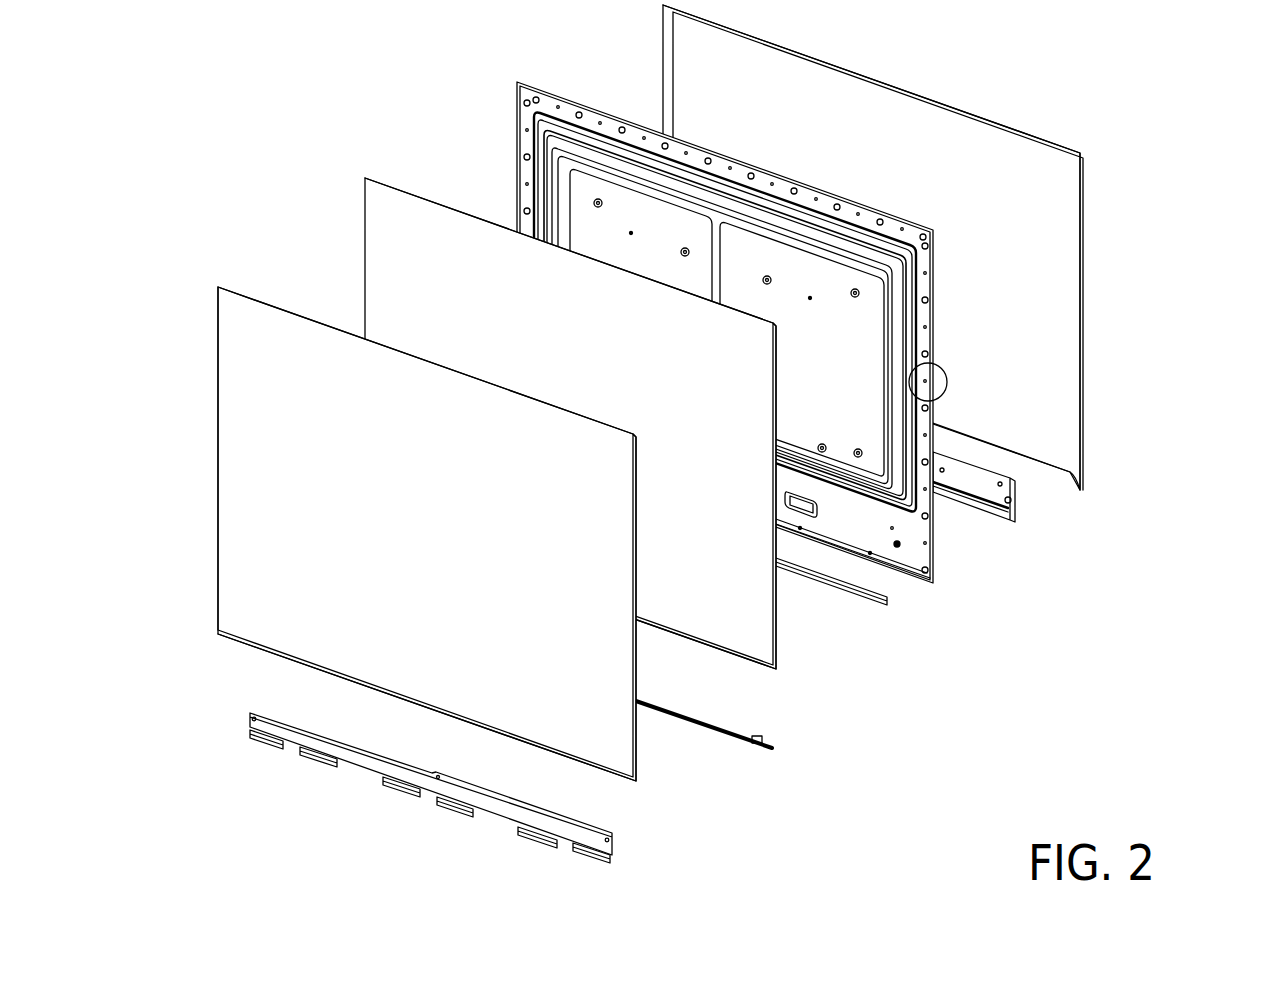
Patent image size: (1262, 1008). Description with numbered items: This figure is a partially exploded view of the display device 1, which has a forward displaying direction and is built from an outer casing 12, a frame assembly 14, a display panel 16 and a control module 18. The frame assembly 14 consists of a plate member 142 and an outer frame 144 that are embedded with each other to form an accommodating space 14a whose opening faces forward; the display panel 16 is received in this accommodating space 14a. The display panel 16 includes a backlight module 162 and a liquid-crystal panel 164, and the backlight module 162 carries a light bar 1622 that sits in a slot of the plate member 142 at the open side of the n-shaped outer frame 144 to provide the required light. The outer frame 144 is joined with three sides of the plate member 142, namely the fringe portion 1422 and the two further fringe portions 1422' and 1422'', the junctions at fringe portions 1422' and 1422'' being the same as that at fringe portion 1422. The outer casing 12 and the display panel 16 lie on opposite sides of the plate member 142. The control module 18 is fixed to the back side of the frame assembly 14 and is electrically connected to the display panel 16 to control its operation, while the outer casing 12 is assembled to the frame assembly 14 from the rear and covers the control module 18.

The display device 1 is at (618, 922).
The outer casing 12 is at (1063, 247).
The frame assembly 14 is at (795, 355).
The accommodating space 14a is at (814, 265).
The plate member 142 is at (848, 527).
The fringe portion 1422 is at (847, 335).
The fringe portion 1422' is at (732, 268).
The fringe portion 1422'' is at (656, 293).
The outer frame 144 is at (933, 522).
The display panel 16 is at (489, 453).
The backlight module 162 is at (382, 218).
The light bar 1622 is at (697, 722).
The liquid-crystal panel 164 is at (420, 501).
The control module 18 is at (363, 763).